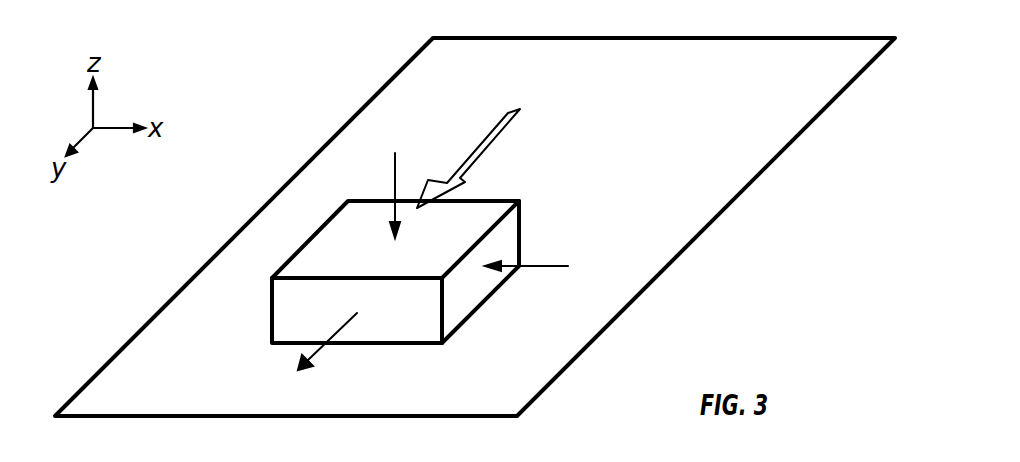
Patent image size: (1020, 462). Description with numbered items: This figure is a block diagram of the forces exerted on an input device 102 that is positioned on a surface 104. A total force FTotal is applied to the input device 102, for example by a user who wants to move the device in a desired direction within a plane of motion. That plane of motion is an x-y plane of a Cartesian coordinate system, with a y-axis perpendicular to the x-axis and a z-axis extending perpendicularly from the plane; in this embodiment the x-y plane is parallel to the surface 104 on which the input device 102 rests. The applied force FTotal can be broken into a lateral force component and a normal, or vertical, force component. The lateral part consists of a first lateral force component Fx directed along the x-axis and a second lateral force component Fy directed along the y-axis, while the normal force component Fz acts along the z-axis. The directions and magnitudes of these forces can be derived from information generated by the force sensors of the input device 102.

The input device 102 is at (370, 212).
The surface 104 is at (511, 400).
The normal force component Fz is at (397, 173).
The first lateral force component Fx is at (542, 274).
The second lateral force component Fy is at (315, 360).
The total force FTotal is at (485, 136).